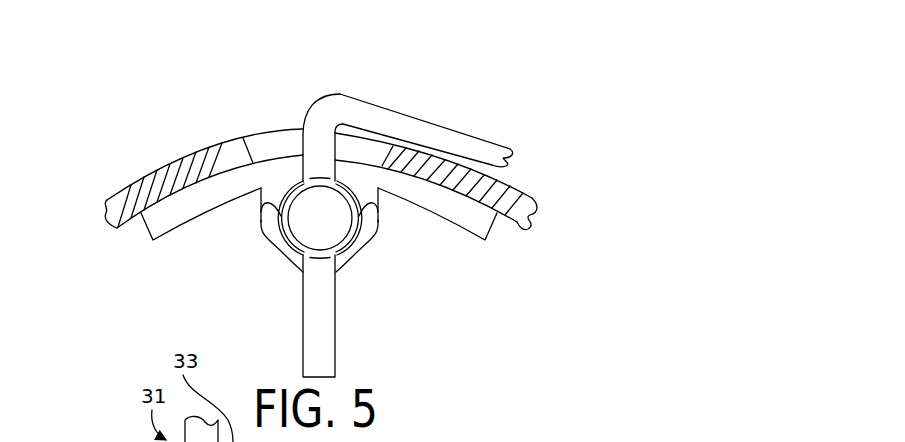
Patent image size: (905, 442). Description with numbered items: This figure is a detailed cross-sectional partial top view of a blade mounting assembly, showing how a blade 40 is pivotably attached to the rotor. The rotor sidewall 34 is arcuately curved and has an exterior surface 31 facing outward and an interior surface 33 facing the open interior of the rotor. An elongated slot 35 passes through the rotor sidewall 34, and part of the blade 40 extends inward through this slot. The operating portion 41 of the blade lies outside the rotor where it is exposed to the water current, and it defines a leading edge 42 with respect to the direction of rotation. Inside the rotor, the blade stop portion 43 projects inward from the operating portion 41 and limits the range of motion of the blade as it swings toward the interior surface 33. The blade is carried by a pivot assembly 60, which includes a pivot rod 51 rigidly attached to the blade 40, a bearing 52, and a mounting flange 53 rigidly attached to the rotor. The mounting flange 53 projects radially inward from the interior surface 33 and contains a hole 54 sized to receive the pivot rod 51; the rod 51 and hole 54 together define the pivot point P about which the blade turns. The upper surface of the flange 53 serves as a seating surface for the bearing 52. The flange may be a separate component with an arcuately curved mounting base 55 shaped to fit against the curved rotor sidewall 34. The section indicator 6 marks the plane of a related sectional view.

The section line 6 is at (258, 125).
The exterior surface 31 is at (121, 178).
The interior surface 33 is at (317, 200).
The rotor sidewall 34 is at (513, 192).
The elongated slot 35 is at (253, 158).
The blade 40 is at (420, 216).
The operating portion 41 is at (414, 116).
The leading edge 42 is at (331, 84).
The blade stop portion 43 is at (328, 344).
The pivot rod 51 is at (333, 207).
The bearing 52 is at (260, 207).
The mounting flange 53 is at (277, 248).
The hole 54 is at (372, 240).
The arcuately curved mounting base 55 is at (148, 225).
The pivot assembly 60 is at (352, 281).
The pivot point P is at (286, 270).